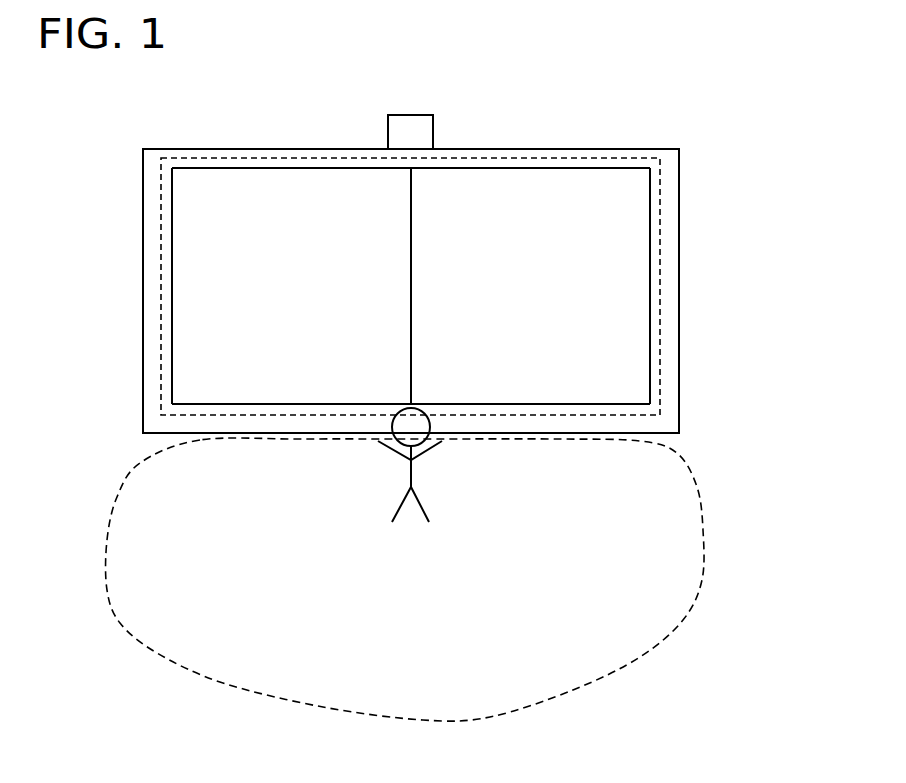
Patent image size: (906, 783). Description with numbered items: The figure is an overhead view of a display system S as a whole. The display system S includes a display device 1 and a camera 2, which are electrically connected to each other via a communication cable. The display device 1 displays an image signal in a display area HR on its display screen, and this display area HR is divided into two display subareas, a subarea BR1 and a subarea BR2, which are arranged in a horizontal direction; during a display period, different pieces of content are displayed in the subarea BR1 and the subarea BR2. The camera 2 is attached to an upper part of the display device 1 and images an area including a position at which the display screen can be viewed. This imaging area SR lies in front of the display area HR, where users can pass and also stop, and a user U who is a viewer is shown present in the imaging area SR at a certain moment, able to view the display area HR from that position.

The display system S is at (603, 149).
The display device 1 is at (680, 187).
The camera 2 is at (434, 131).
The display area HR is at (661, 330).
The subarea BR1 is at (172, 233).
The subarea BR2 is at (650, 233).
The user U is at (420, 505).
The imaging area SR is at (705, 530).